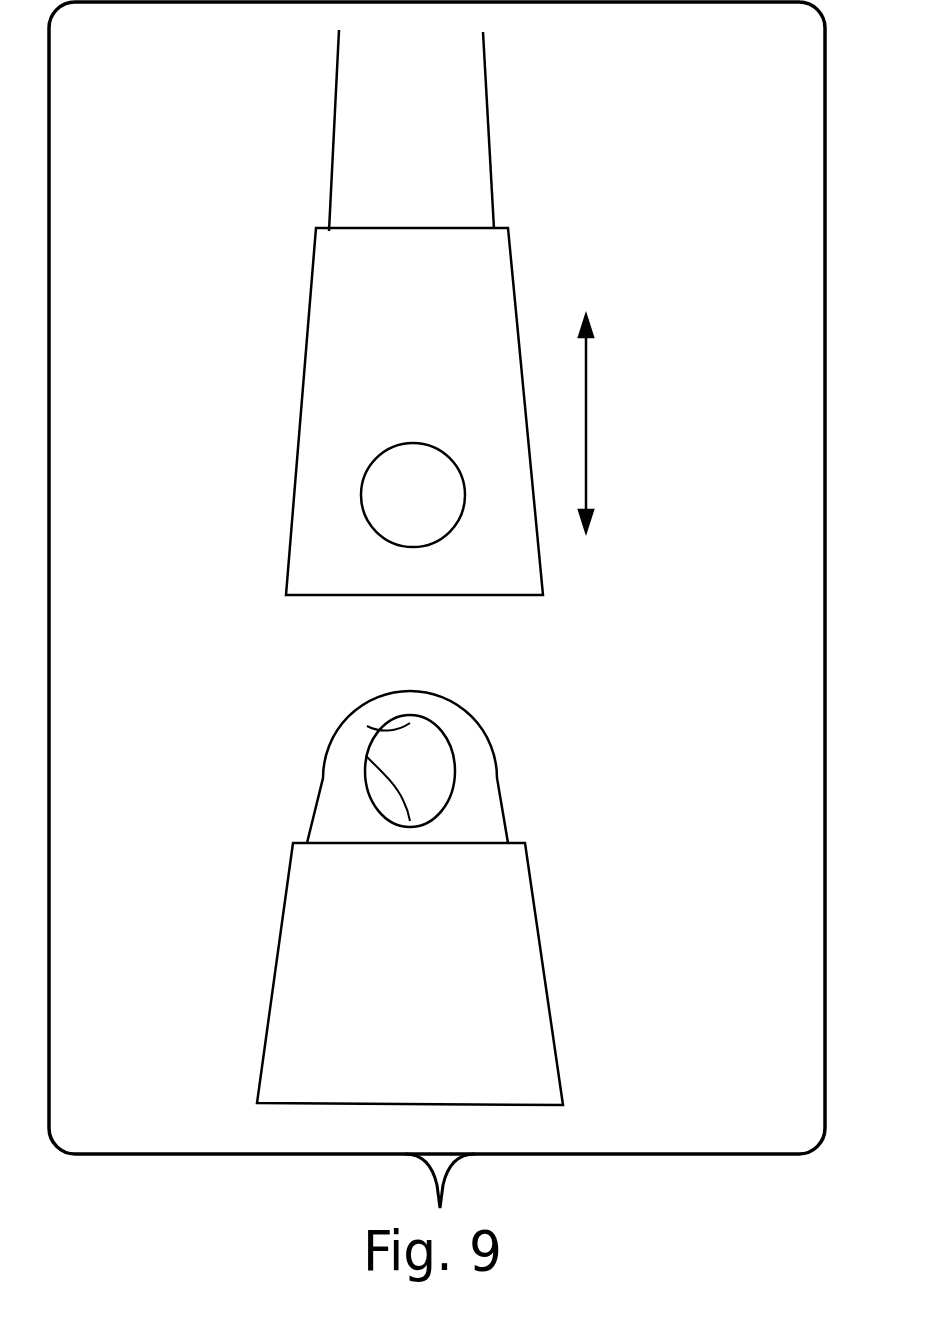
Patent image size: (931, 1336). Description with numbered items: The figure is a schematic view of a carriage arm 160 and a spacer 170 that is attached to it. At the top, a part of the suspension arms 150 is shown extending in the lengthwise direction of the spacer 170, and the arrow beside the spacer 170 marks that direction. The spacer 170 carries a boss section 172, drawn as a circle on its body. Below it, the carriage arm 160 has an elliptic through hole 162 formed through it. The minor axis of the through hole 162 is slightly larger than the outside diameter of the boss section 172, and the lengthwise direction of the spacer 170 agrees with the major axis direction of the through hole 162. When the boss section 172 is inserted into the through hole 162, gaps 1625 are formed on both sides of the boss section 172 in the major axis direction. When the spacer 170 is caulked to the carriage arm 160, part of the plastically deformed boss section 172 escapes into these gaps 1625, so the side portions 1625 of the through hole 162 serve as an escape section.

The suspension arm 150 is at (470, 117).
The spacer 170 is at (540, 265).
The boss section 172 is at (462, 480).
The carriage arm 160 is at (552, 969).
The elliptic through hole 162 is at (448, 742).
The gaps (side portions of the through hole) 1625 is at (366, 756).